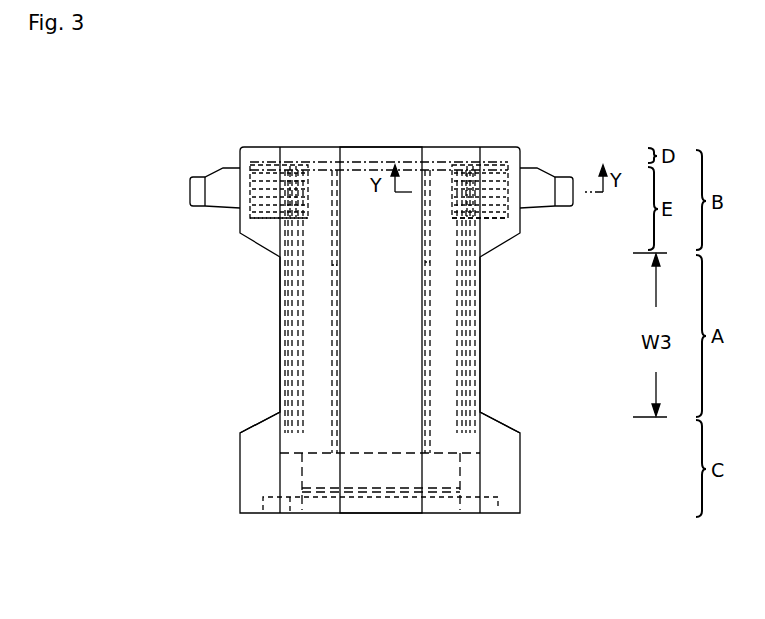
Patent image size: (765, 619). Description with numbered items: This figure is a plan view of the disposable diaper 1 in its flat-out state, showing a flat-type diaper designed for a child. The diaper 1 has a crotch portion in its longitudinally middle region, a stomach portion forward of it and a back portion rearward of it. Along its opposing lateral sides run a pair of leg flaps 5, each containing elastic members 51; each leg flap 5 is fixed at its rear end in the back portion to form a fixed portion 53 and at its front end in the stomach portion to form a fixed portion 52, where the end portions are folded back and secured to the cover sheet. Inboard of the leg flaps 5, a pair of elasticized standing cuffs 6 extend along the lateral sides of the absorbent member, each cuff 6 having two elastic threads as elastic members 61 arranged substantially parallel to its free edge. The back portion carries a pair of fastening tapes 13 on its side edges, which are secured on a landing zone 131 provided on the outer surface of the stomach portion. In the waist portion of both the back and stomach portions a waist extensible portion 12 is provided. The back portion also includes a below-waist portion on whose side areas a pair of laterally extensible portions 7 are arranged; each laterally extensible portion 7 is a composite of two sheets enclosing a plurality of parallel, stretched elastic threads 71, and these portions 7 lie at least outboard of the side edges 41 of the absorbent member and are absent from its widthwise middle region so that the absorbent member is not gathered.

The disposable diaper 1 is at (520, 534).
The leg flap 5 is at (281, 356).
The standing cuff 6 is at (421, 250).
The laterally extensible portion 7 is at (260, 162).
The waist extensible portion 12 is at (378, 146).
The fastening tape 13 is at (212, 178).
The side edge of the absorbent member 41 is at (302, 470).
The elastic member of the leg flap 51 is at (292, 328).
The fixed portion 52 is at (282, 413).
The fixed portion 53 is at (283, 197).
The elastic member of the cuff 61 is at (337, 282).
The elastic thread 71 is at (295, 203).
The landing zone 131 is at (290, 492).